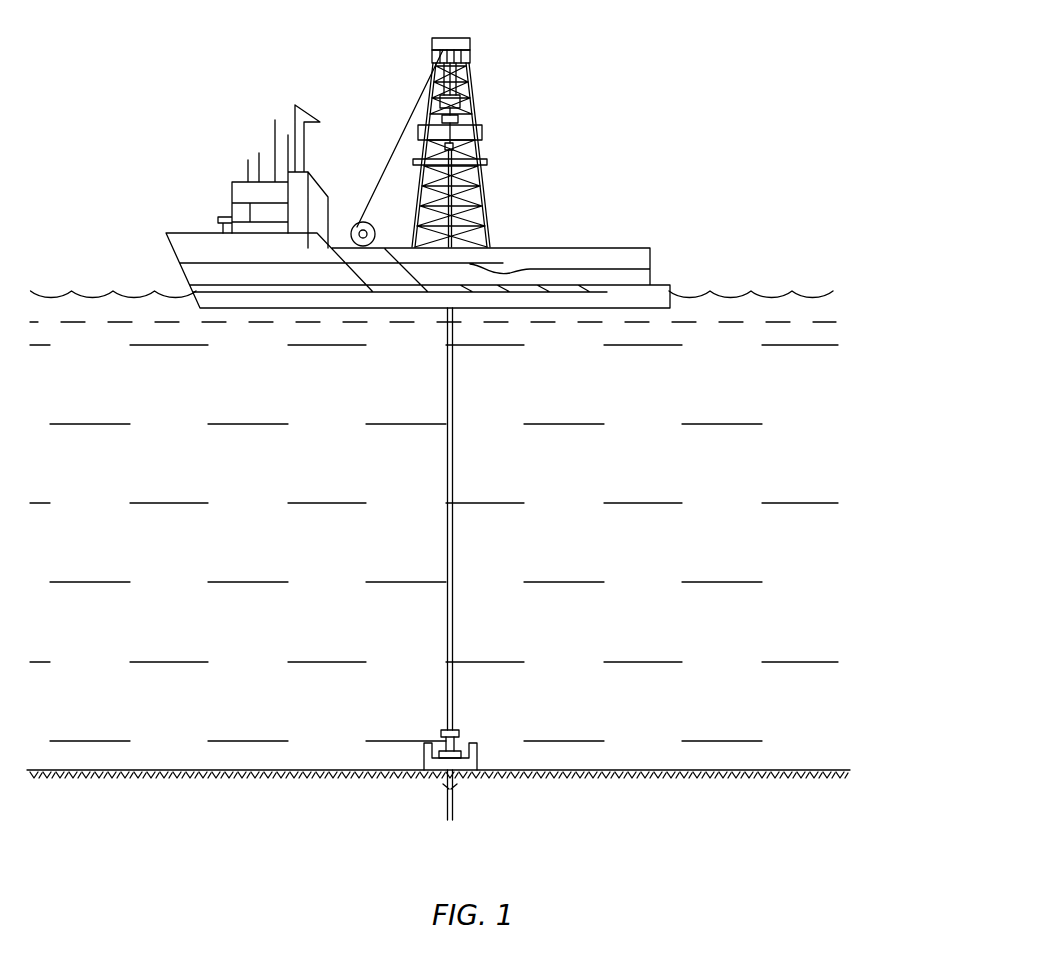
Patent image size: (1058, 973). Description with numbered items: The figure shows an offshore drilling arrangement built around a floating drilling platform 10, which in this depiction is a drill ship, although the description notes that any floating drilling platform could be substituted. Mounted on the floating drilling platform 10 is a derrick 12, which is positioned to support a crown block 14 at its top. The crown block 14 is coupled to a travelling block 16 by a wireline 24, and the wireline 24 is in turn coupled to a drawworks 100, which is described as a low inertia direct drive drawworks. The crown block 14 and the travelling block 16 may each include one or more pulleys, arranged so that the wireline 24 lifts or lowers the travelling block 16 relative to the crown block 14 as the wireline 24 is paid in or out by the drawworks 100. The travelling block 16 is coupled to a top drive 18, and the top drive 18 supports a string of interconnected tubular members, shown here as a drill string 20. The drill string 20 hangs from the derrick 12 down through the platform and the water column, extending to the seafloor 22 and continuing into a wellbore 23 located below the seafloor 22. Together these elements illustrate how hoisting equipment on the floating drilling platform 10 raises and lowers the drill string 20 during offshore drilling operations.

The floating drilling platform 10 is at (652, 126).
The derrick 12 is at (505, 143).
The crown block 14 is at (468, 55).
The travelling block 16 is at (466, 100).
The top drive 18 is at (457, 148).
The drill string 20 is at (468, 175).
The seafloor 22 is at (563, 770).
The wellbore 23 is at (456, 797).
The wireline 24 is at (418, 105).
The drawworks 100 is at (373, 223).